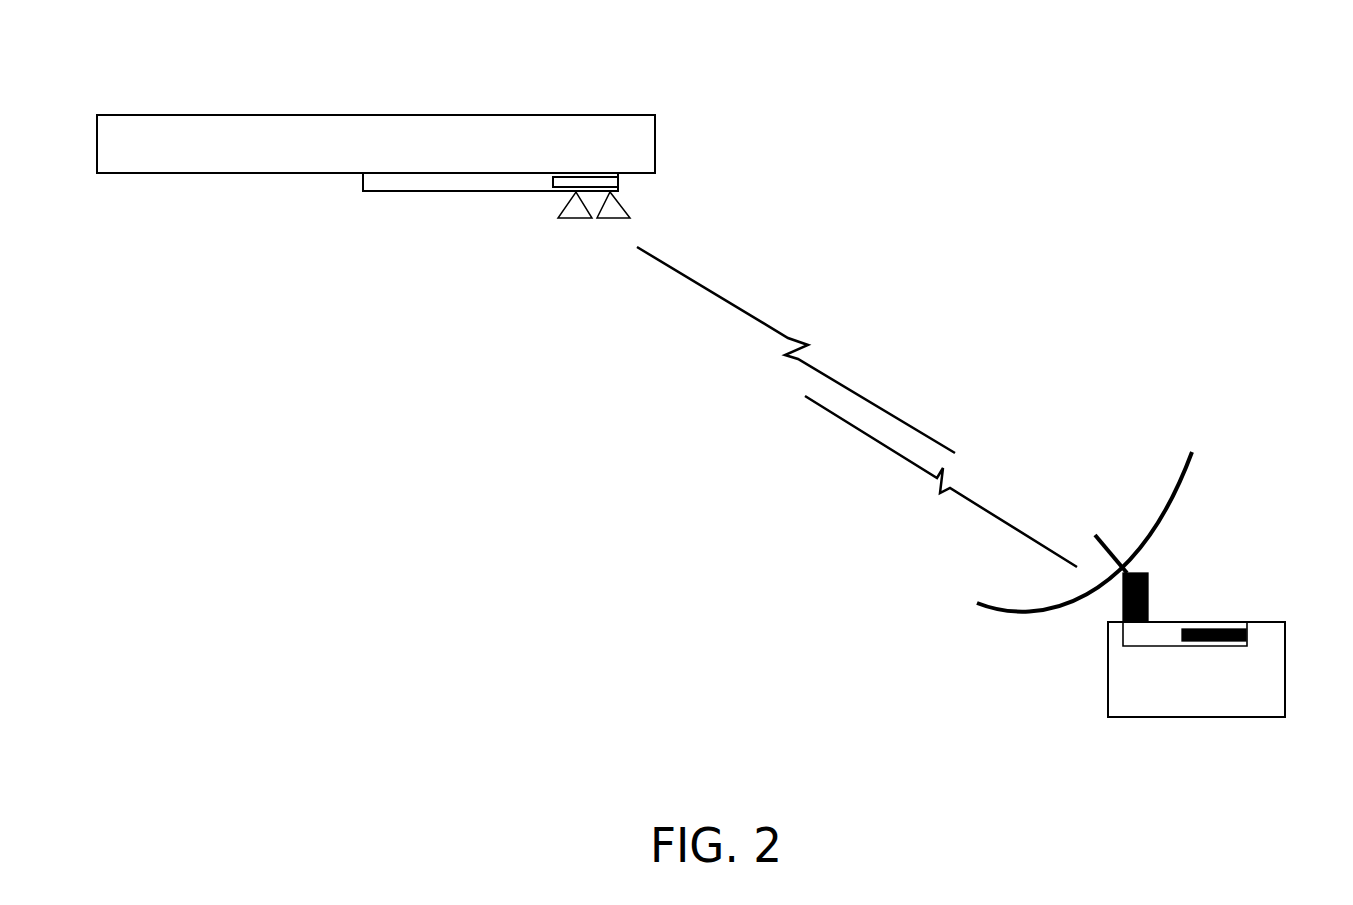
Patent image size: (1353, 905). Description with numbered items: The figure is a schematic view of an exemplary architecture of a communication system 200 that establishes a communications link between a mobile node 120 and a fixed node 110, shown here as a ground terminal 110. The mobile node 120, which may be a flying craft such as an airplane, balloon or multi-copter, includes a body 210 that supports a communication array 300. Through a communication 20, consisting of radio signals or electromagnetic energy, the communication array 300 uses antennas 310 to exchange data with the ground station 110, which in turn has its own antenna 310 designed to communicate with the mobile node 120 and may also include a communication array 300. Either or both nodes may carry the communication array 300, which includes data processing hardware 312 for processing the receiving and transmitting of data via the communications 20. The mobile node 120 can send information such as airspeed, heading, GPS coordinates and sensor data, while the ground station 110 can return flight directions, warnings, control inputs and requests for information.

The communication system 200 is at (1178, 75).
The mobile node 120 is at (237, 85).
The body 210 is at (533, 113).
The communication array 300 is at (455, 192).
The data processing hardware 312 is at (618, 178).
The antenna 310 is at (623, 203).
The communication 20 is at (790, 331).
The fixed node 110 is at (1233, 622).